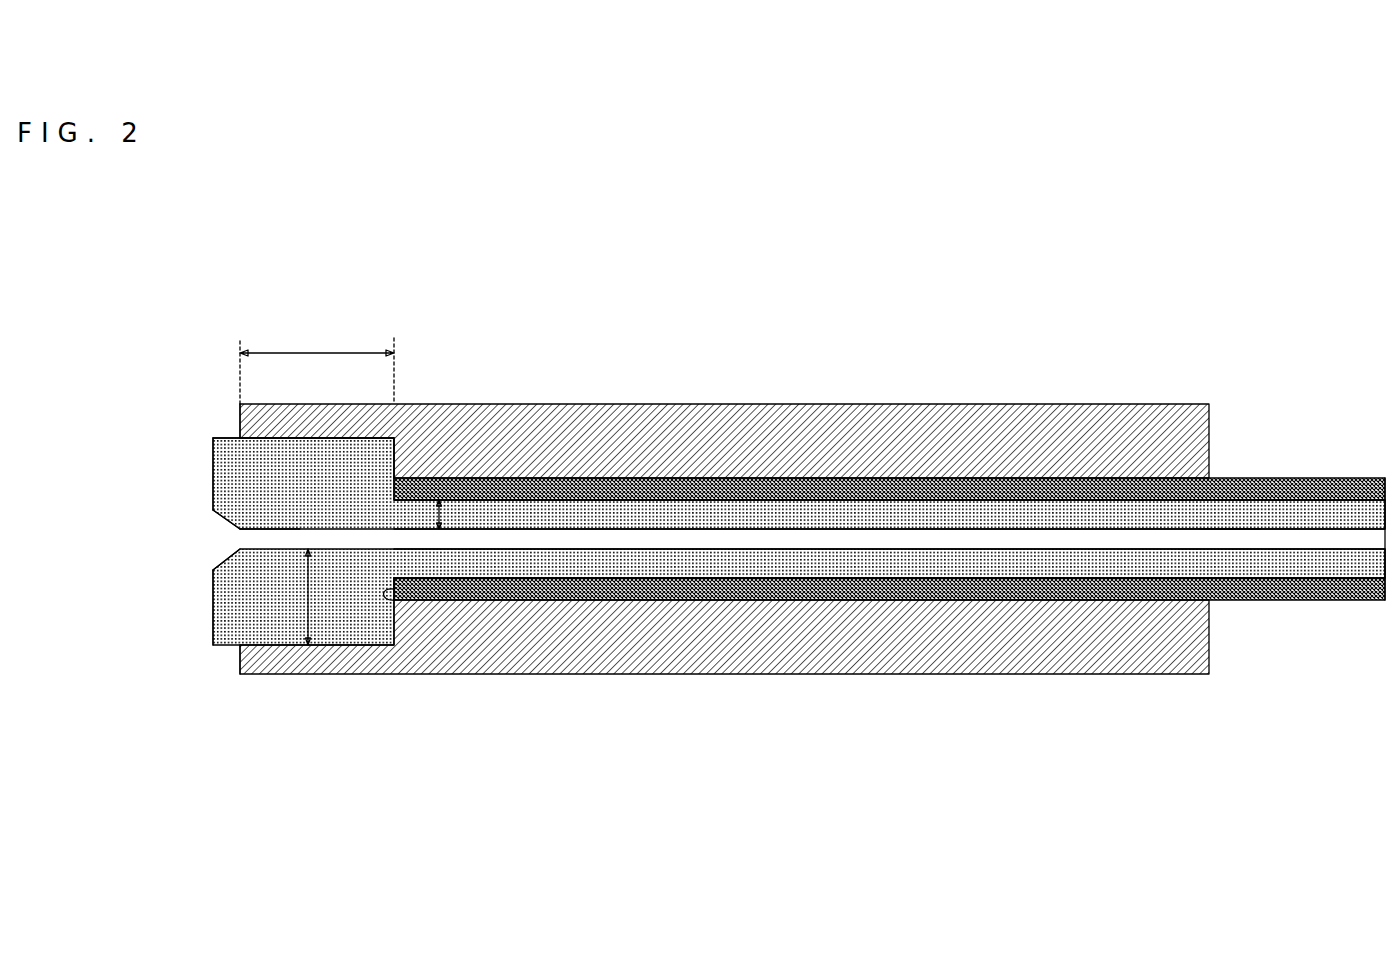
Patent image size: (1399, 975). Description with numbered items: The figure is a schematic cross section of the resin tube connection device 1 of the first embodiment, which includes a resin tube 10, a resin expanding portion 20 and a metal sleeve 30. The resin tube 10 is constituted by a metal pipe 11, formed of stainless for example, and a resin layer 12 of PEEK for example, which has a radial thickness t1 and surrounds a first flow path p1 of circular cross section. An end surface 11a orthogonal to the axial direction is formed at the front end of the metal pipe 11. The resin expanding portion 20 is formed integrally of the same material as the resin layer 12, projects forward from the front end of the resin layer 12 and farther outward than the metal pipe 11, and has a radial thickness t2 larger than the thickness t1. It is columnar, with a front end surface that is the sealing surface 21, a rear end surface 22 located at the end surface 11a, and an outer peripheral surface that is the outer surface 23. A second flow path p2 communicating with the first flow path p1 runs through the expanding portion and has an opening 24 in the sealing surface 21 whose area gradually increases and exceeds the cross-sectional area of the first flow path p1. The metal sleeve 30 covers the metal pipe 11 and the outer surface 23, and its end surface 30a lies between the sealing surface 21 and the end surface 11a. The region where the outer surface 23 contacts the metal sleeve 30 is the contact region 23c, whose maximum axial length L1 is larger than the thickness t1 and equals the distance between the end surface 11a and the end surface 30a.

The resin tube connection device 1 is at (1329, 276).
The resin tube 10 is at (889, 658).
The metal pipe 11 is at (1263, 590).
The end surface 11a is at (395, 600).
The resin layer 12 is at (1330, 562).
The resin expanding portion 20 is at (263, 618).
The sealing surface 21 is at (213, 487).
The rear end surface 22 is at (395, 457).
The outer surface 23 is at (228, 436).
The contact region 23c is at (307, 437).
The opening 24 is at (213, 549).
The metal sleeve 30 is at (948, 432).
The end surface 30a is at (240, 430).
The first flow path p1 is at (1232, 540).
The second flow path p2 is at (266, 543).
The thickness t1 is at (445, 513).
The thickness t2 is at (307, 601).
The maximum length L1 is at (317, 361).